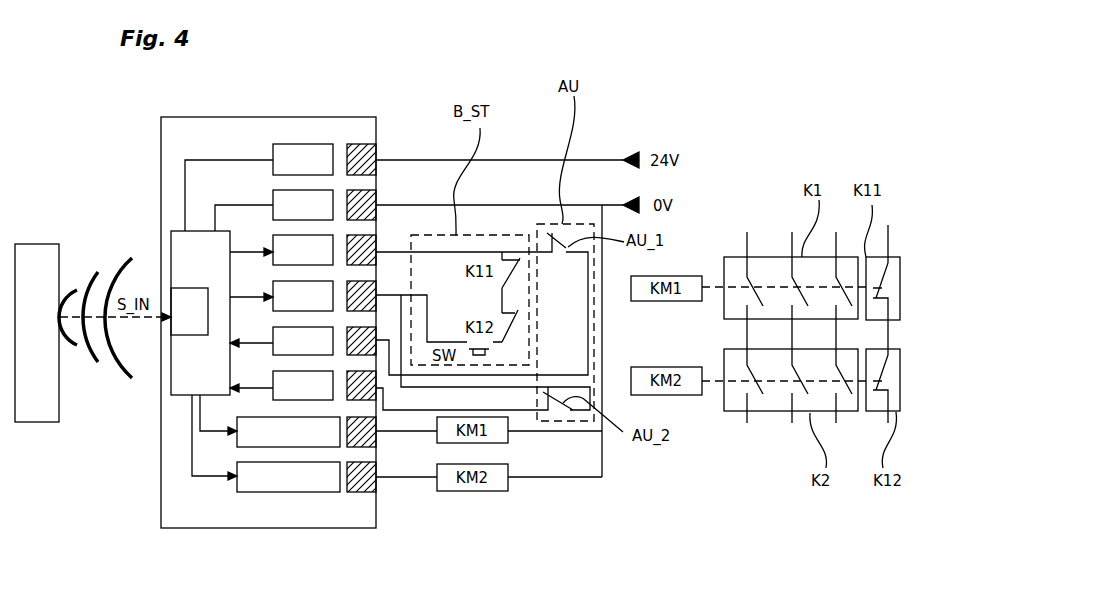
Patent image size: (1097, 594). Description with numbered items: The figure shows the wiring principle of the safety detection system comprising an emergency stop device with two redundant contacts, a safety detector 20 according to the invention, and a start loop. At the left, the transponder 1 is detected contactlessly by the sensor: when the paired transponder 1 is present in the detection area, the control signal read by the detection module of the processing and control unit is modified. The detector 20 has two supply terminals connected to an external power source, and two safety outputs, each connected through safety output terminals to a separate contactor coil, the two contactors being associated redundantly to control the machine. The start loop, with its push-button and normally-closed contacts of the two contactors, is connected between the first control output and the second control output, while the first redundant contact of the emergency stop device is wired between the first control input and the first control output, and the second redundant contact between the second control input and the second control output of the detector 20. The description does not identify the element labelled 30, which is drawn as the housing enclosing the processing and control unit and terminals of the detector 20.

The transponder 1 is at (44, 243).
The safety detector 20 is at (128, 127).
The control unit 30 is at (227, 117).